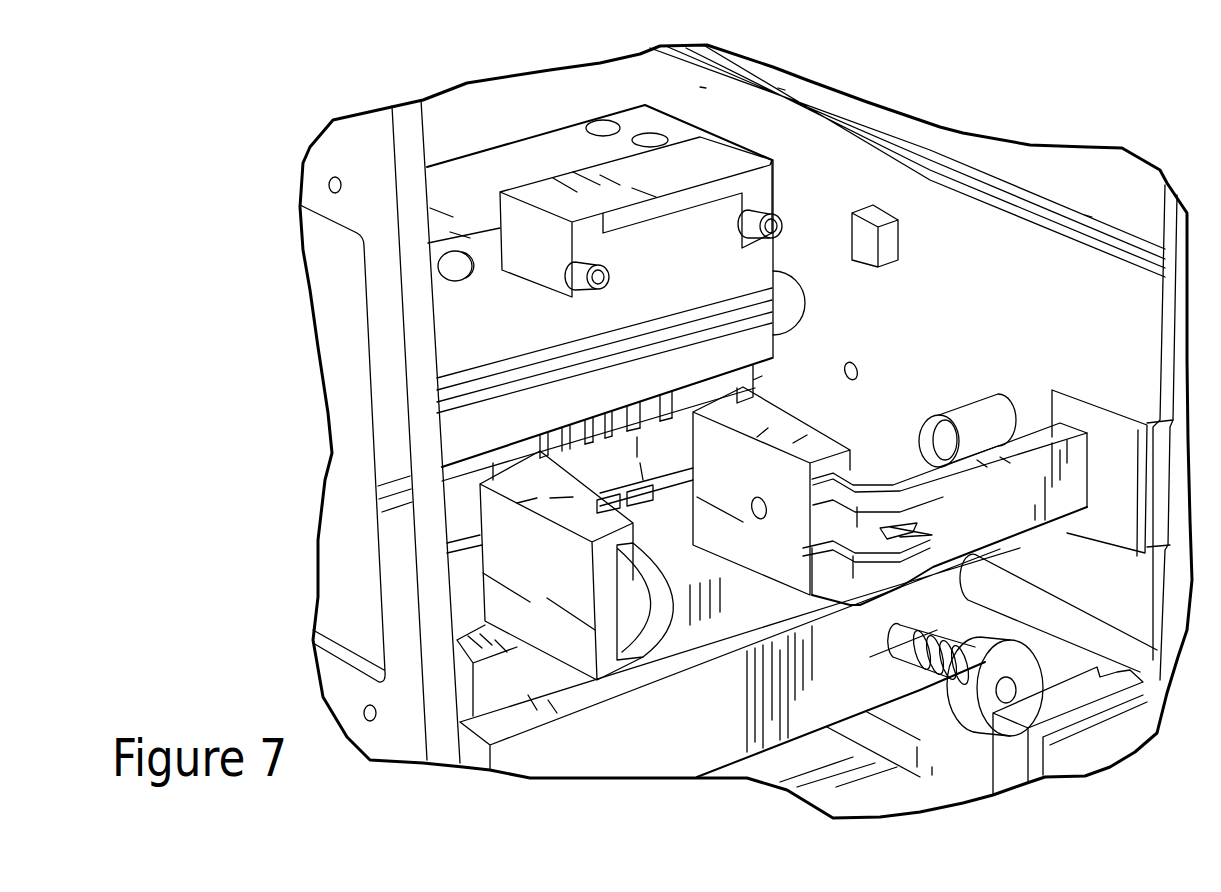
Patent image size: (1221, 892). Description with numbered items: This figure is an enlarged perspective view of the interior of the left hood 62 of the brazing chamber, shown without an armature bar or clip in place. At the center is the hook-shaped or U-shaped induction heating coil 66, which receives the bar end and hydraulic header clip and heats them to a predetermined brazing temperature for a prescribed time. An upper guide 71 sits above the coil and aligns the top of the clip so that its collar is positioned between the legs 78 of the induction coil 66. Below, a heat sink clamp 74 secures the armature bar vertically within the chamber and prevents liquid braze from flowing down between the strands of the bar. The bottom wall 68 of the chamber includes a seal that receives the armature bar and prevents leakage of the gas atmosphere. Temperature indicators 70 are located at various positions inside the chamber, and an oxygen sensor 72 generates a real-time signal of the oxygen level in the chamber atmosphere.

The left hood 62 is at (1019, 286).
The induction heating coil 66 is at (826, 441).
The bottom wall 68 is at (949, 734).
The temperature indicators 70 is at (980, 421).
The upper guide 71 is at (701, 177).
The oxygen sensor 72 is at (893, 246).
The heat sink clamp 74 is at (698, 747).
The legs 78 is at (744, 484).